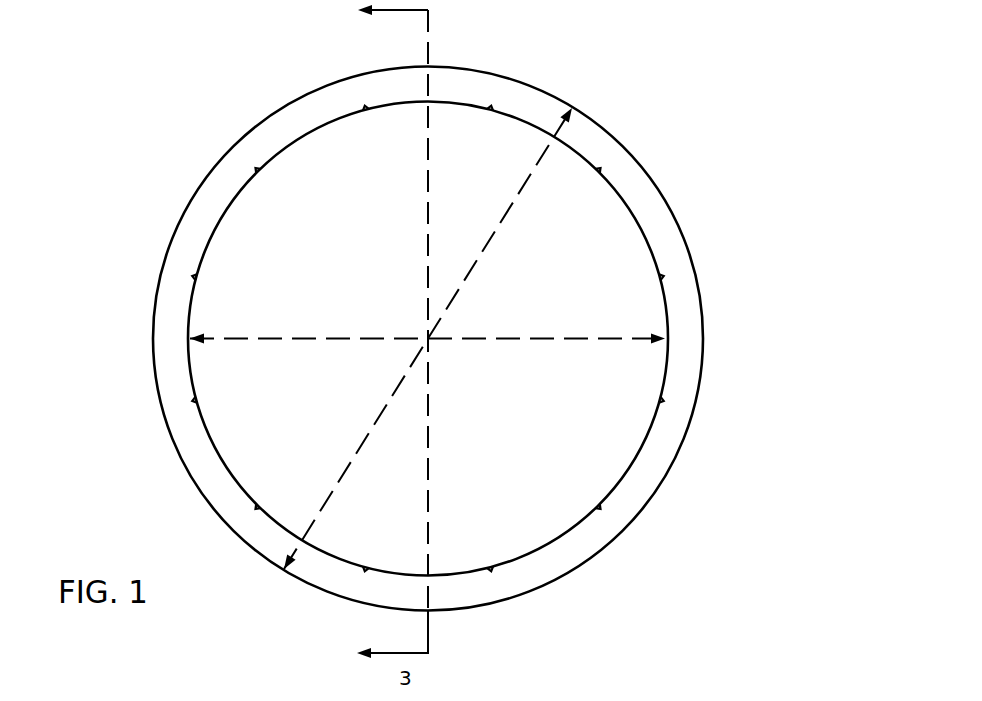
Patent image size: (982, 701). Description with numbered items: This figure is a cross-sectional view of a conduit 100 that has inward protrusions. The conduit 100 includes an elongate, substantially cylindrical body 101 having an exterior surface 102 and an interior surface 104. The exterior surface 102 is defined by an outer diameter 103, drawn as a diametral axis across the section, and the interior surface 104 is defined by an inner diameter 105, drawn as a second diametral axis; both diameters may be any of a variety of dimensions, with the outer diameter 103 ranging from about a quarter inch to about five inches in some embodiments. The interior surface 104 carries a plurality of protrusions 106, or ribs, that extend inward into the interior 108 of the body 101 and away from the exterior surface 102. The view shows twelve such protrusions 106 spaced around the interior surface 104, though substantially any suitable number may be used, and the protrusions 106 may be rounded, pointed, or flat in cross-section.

The conduit 100 is at (175, 80).
The body 101 is at (598, 152).
The exterior surface 102 is at (516, 71).
The outer diameter 103 is at (392, 396).
The interior surface 104 is at (622, 214).
The inner diameter 105 is at (273, 333).
The protrusions 106 is at (490, 112).
The interior 108 is at (615, 268).